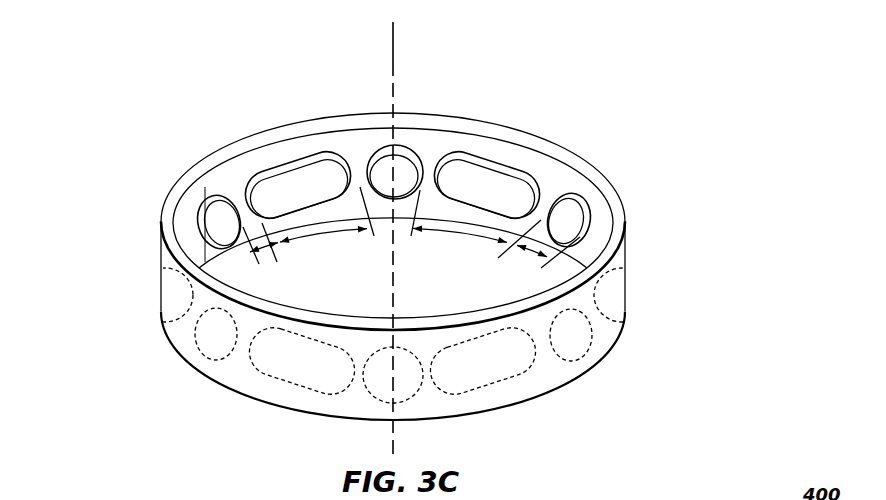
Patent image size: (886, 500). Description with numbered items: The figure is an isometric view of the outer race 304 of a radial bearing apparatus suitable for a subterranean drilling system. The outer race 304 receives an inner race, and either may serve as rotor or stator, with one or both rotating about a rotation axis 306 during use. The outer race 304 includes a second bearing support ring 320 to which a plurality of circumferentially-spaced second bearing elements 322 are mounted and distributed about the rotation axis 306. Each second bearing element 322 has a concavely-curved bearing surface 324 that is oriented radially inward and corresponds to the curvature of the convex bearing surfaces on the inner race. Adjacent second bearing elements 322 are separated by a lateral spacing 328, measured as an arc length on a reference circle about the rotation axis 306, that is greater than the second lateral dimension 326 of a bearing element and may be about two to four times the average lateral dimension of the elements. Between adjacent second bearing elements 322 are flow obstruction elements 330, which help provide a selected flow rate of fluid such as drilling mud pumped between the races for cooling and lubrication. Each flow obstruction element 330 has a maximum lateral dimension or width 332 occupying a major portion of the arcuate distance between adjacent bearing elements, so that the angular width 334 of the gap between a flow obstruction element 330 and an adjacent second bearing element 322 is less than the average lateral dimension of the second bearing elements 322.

The outer race 304 is at (699, 102).
The rotation axis 306 is at (396, 48).
The second bearing support ring 320 is at (619, 228).
The second bearing element 322 is at (403, 168).
The concavely-curved bearing surface 324 is at (410, 160).
The flow obstruction element 330 is at (303, 162).
The maximum lateral dimension or width 332 is at (329, 234).
The lateral spacing 328 is at (466, 232).
The second lateral dimension 326 is at (532, 251).
The angular width 334 is at (272, 253).